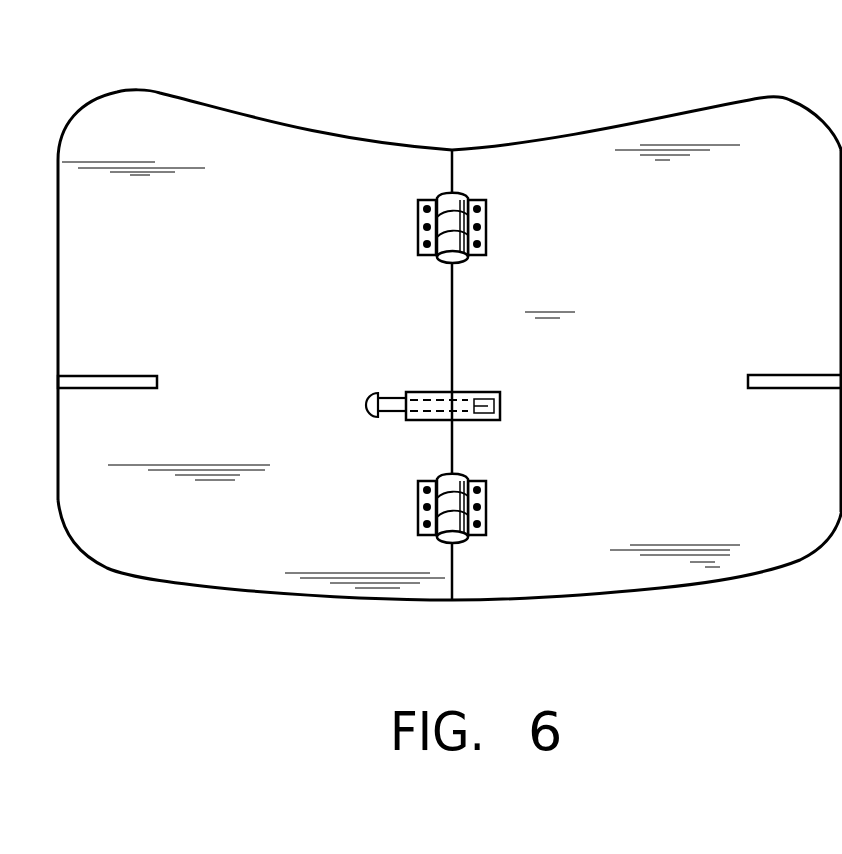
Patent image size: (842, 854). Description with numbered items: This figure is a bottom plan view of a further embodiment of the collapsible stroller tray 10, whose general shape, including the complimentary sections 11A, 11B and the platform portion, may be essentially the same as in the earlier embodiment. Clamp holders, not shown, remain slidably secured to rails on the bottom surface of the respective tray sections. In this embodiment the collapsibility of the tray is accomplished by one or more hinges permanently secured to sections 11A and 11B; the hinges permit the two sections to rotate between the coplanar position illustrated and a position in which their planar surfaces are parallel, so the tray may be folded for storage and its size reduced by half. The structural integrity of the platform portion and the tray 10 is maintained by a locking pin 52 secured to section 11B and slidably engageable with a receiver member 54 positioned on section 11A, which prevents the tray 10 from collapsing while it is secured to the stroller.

The collapsible stroller tray 10 is at (586, 90).
The complimentary tray section 11A is at (304, 153).
The complimentary tray section 11B is at (588, 580).
The locking pin 52 is at (385, 402).
The receiver member 54 is at (462, 402).